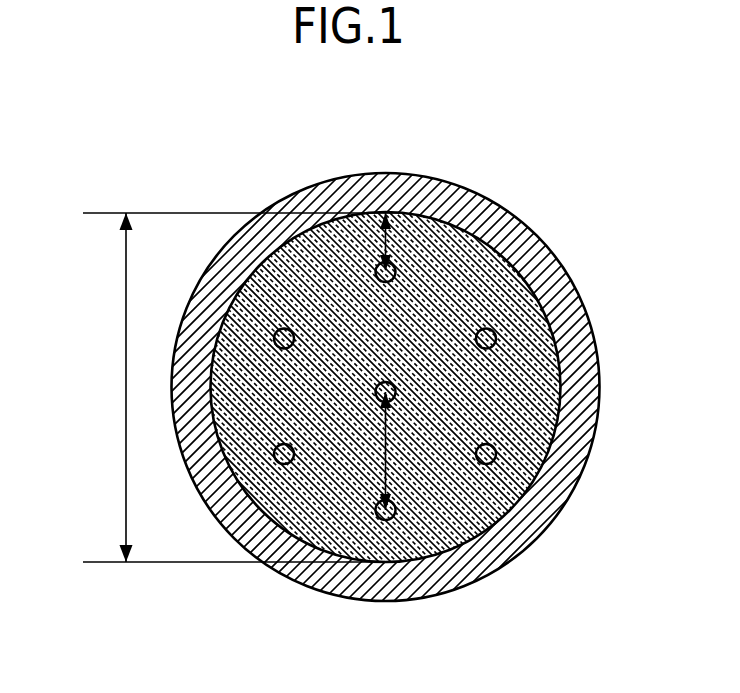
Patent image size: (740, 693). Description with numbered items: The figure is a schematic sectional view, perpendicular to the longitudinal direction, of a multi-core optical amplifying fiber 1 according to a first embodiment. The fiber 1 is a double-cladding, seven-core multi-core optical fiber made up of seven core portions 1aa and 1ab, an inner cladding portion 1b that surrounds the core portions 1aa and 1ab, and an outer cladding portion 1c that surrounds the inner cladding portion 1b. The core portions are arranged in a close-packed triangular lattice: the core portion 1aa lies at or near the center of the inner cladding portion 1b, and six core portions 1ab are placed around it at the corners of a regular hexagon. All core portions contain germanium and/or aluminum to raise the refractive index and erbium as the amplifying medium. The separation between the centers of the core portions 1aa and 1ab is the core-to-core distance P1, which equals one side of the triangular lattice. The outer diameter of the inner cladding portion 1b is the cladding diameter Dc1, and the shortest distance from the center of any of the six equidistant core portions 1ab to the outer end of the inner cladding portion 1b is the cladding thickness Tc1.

The multi-core optical amplifying fiber 1 is at (533, 170).
The core portion 1aa is at (390, 373).
The core portions 1ab is at (487, 332).
The inner cladding portion 1b is at (537, 366).
The outer cladding portion 1c is at (575, 420).
The cladding thickness Tc1 is at (389, 214).
The core-to-core distance P1 is at (392, 457).
The cladding diameter Dc1 is at (126, 358).